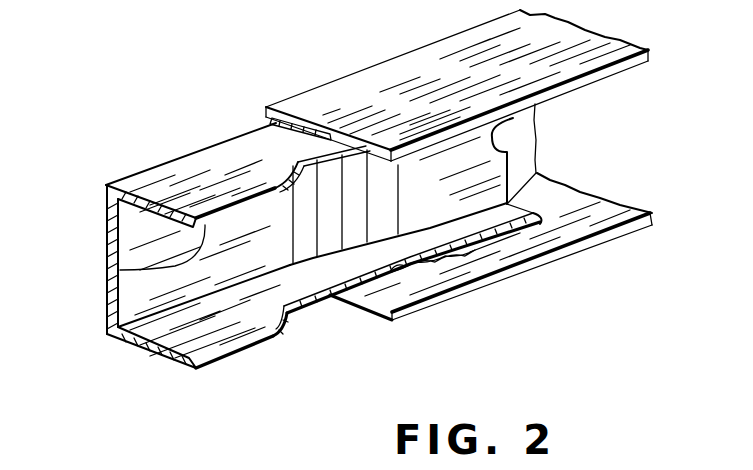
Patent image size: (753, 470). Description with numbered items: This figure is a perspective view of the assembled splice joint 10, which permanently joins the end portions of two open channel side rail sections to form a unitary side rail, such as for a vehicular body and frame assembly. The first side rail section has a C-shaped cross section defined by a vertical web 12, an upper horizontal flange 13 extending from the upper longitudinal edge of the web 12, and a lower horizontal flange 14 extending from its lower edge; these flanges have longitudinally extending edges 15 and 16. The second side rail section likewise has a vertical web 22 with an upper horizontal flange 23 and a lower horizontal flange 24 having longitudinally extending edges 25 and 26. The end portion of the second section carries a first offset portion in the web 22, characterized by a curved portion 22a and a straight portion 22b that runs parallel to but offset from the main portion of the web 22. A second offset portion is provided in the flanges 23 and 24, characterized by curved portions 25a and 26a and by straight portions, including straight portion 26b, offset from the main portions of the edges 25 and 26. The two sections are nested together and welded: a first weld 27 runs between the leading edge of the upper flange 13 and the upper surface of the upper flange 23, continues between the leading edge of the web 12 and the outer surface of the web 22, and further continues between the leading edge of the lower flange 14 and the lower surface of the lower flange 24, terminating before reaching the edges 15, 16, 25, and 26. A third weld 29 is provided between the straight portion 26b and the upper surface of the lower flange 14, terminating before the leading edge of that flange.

The splice joint 10 is at (257, 0).
The web 12 is at (522, 130).
The upper horizontal flange 13 is at (480, 83).
The lower horizontal flange 14 is at (573, 212).
The longitudinally extending edge 15 is at (617, 70).
The longitudinally extending edge 16 is at (613, 238).
The web 22 is at (138, 237).
The curved portion 22a is at (330, 222).
The straight portion 22b is at (457, 180).
The upper horizontal flange 23 is at (214, 191).
The lower horizontal flange 24 is at (185, 342).
The longitudinally extending edge 25 is at (120, 277).
The curved portion 25a is at (298, 162).
The longitudinally extending edge 26 is at (220, 357).
The curved portion 26a is at (290, 318).
The straight portion 26b is at (377, 275).
The first weld 27 is at (278, 132).
The third weld 29 is at (463, 245).